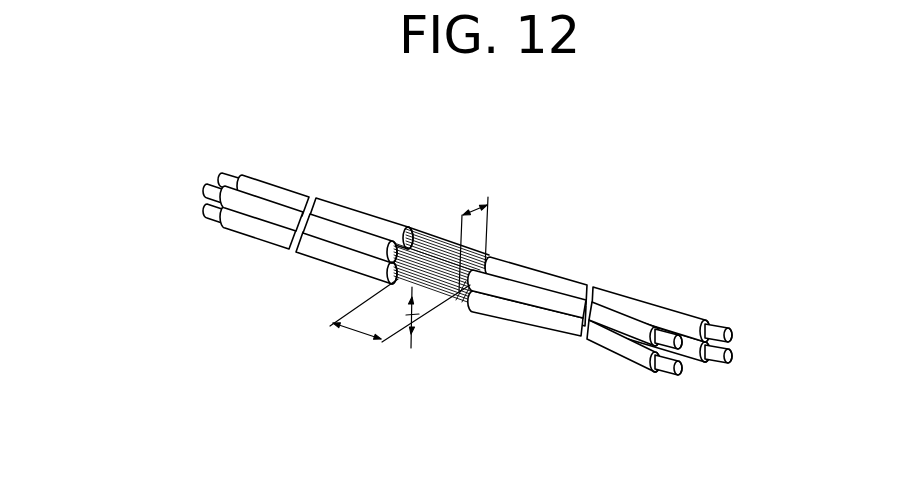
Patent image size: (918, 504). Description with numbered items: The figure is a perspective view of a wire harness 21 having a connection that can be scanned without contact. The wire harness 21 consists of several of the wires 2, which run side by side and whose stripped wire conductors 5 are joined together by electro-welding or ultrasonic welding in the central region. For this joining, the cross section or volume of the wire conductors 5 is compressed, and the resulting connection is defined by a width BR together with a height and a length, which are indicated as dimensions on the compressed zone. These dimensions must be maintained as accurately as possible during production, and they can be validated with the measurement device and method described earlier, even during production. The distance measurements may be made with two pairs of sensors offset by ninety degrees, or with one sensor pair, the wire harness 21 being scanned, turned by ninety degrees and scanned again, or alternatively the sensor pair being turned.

The wire harness 21 is at (436, 291).
The wire 2 is at (478, 291).
The wire conductor 5 is at (425, 230).
The width BR is at (466, 212).